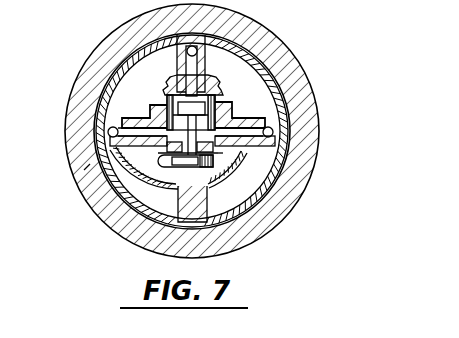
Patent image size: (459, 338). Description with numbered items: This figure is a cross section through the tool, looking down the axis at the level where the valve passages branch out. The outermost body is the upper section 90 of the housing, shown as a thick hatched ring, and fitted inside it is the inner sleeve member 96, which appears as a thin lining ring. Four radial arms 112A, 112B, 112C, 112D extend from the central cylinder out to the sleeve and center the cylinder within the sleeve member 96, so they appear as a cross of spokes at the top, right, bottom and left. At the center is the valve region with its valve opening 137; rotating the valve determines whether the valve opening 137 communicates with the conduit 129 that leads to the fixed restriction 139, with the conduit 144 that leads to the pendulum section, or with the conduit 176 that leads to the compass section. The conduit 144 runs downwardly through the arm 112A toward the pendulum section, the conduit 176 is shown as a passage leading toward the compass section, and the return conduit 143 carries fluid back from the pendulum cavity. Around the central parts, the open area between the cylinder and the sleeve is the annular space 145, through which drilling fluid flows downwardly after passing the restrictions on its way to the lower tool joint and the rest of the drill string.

The upper section 90 is at (91, 53).
The inner sleeve member 96 is at (262, 63).
The radial arm 112A is at (182, 55).
The radial arm 112B is at (270, 143).
The radial arm 112C is at (226, 222).
The radial arm 112D is at (84, 170).
The conduit 129 is at (240, 114).
The valve opening 137 is at (197, 107).
The fixed restriction 139 is at (253, 141).
The return conduit 143 is at (273, 132).
The conduit 144 is at (203, 43).
The annular space 145 is at (159, 196).
The conduit 176 is at (108, 129).